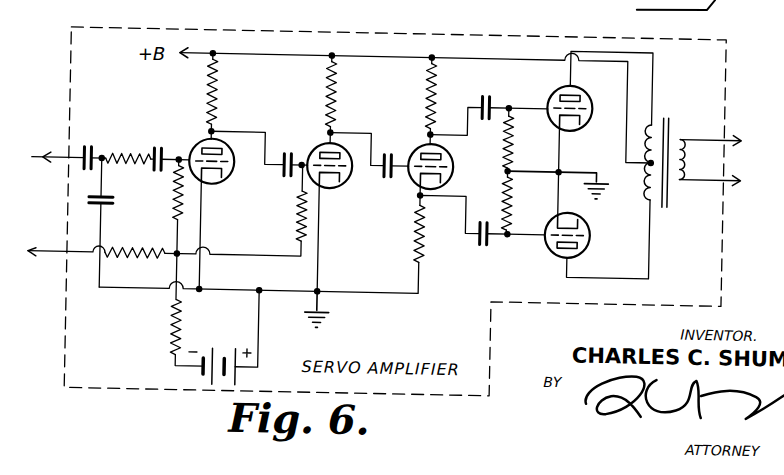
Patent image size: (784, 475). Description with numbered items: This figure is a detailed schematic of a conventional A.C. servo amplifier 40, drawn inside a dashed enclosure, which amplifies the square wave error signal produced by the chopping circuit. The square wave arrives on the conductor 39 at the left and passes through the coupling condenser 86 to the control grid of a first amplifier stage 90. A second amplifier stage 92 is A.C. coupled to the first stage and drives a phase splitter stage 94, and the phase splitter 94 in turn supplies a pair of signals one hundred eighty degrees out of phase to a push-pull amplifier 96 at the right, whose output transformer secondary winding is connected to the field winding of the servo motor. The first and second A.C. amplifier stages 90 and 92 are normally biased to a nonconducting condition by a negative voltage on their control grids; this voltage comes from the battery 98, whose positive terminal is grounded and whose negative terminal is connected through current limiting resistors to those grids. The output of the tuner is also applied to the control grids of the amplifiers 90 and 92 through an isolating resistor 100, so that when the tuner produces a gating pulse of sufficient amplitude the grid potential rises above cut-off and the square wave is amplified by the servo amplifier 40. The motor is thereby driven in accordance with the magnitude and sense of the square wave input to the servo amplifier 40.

The conductor 39 is at (61, 154).
The servo amplifier 40 is at (66, 64).
The coupling condenser 86 is at (94, 150).
The first amplifier stage 90 is at (182, 135).
The second amplifier stage 92 is at (299, 119).
The phase splitter stage 94 is at (400, 117).
The push-pull amplifier 96 is at (627, 225).
The battery 98 is at (245, 344).
The isolating resistor 100 is at (123, 256).